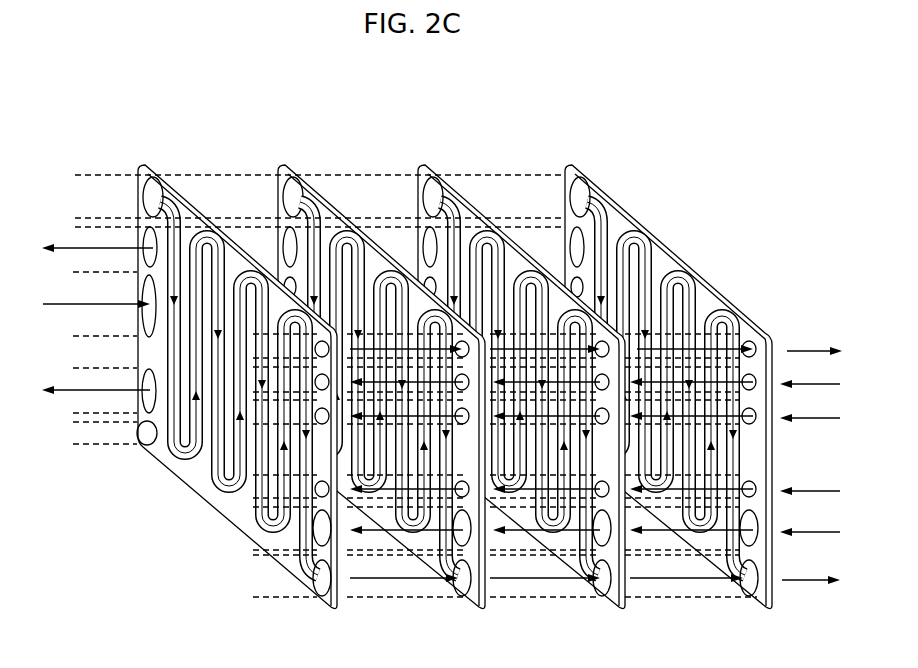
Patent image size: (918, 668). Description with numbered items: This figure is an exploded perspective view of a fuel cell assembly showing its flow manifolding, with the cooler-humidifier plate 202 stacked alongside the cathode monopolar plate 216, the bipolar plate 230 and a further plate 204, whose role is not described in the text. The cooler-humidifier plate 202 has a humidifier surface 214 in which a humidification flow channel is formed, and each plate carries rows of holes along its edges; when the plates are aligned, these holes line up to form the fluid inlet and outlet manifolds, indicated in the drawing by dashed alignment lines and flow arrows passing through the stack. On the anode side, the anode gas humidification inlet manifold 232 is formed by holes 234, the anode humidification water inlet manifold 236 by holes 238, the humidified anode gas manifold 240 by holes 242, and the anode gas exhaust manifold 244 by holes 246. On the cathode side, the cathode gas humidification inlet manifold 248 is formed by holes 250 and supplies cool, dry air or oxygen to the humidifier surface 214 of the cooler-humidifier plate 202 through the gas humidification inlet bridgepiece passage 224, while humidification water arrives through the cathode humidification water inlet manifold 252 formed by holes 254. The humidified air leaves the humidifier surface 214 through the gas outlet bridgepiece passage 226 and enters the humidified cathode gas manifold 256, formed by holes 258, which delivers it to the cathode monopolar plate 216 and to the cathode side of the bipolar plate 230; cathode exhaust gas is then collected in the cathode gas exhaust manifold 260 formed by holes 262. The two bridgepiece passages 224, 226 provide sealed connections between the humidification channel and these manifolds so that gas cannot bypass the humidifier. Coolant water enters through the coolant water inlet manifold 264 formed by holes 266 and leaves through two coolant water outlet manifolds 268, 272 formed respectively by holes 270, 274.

The cooler-humidifier plate 202 is at (293, 165).
The third plate 204 is at (428, 165).
The humidifier surface 214 is at (354, 357).
The cathode monopolar plate 216 is at (139, 165).
The gas humidification inlet bridgepiece passage 224 is at (452, 512).
The gas outlet bridgepiece passage 226 is at (285, 205).
The bipolar plate 230 is at (566, 166).
The anode gas humidification inlet manifold 232 is at (562, 402).
The holes 234 is at (752, 380).
The anode humidification water inlet manifold 236 is at (573, 420).
The holes 238 is at (752, 414).
The humidified anode gas manifold 240 is at (90, 440).
The holes 242 is at (143, 436).
The anode gas exhaust manifold 244 is at (560, 337).
The holes 246 is at (752, 347).
The cathode gas humidification inlet manifold 248 is at (543, 540).
The holes 250 is at (750, 526).
The cathode humidification water inlet manifold 252 is at (563, 490).
The holes 254 is at (752, 487).
The humidified cathode gas manifold 256 is at (100, 180).
The holes 258 is at (150, 192).
The cathode gas exhaust manifold 260 is at (523, 592).
The holes 262 is at (740, 585).
The coolant water inlet manifold 264 is at (78, 328).
The holes 266 is at (148, 300).
The coolant water outlet manifold 268 is at (80, 263).
The holes 270 is at (150, 246).
The coolant water outlet manifold 272 is at (90, 405).
The holes 274 is at (147, 388).